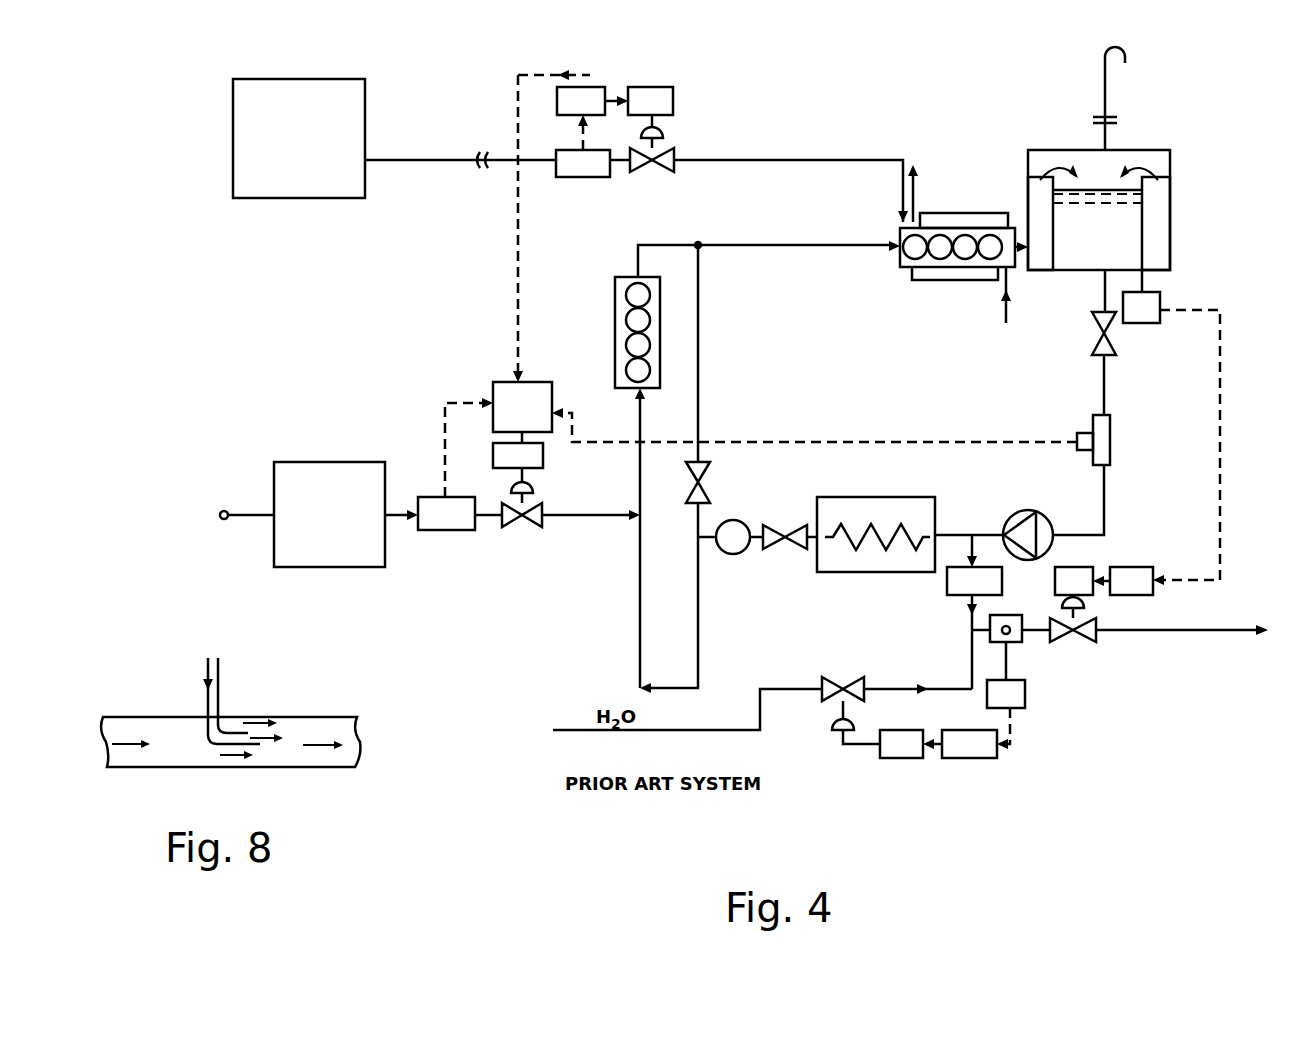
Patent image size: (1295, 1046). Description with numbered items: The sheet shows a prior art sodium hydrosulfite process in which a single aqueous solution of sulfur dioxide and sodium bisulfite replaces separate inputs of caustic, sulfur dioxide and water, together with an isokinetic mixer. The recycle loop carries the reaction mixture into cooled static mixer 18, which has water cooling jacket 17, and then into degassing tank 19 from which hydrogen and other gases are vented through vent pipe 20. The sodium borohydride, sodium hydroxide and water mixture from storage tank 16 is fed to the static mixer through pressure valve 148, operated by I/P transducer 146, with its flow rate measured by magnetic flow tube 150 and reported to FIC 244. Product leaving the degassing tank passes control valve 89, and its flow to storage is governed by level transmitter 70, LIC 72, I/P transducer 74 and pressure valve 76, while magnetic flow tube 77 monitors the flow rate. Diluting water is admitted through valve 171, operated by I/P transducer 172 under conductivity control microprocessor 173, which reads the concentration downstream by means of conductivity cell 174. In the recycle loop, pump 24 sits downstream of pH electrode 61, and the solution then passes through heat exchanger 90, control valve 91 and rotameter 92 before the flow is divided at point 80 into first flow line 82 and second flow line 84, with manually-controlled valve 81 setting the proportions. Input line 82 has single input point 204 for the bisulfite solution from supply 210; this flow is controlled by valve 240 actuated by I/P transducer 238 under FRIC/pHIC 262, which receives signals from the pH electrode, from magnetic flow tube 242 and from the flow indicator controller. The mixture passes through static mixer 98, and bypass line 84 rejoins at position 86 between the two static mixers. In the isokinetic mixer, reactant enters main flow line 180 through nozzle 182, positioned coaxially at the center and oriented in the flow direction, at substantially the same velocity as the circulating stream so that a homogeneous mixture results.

In FIG. 4, the storage tank 16 is at (233, 113).
In FIG. 4, the water cooling jacket 17 is at (976, 213).
In FIG. 4, the static mixer 18 is at (941, 235).
In FIG. 4, the degassing tank 19 is at (1162, 230).
In FIG. 4, the vent pipe 20 is at (1106, 98).
In FIG. 4, the pump 24 is at (1025, 523).
In FIG. 4, the pH electrode 61 is at (1110, 462).
In FIG. 4, the level transmitter 70 is at (1160, 300).
In FIG. 4, the LIC 72 is at (1128, 568).
In FIG. 4, the I/P transducer 74 is at (1075, 569).
In FIG. 4, the pressure valve 76 is at (1076, 636).
In FIG. 4, the magnetic flow tube 77 is at (952, 596).
In FIG. 4, the dividing point 80 is at (697, 540).
In FIG. 4, the manually-controlled valve 81 is at (690, 480).
In FIG. 4, the first flow line 82 is at (699, 647).
In FIG. 4, the second flow line 84 is at (699, 350).
In FIG. 4, the rejoining position 86 is at (699, 245).
In FIG. 4, the control valve 89 is at (1096, 341).
In FIG. 4, the heat exchanger 90 is at (869, 497).
In FIG. 4, the control valve 91 is at (785, 547).
In FIG. 4, the rotameter 92 is at (737, 554).
In FIG. 4, the static mixer 98 is at (615, 303).
In FIG. 4, the I/P transducer 146 is at (673, 101).
In FIG. 4, the pressure valve 148 is at (657, 170).
In FIG. 4, the magnetic flow tube 150 is at (583, 177).
In FIG. 4, the valve 171 is at (843, 686).
In FIG. 4, the I/P transducer 172 is at (899, 758).
In FIG. 4, the conductivity control microprocessor 173 is at (977, 758).
In FIG. 4, the conductivity cell 174 is at (1024, 644).
In FIG. 8, the main flow line 180 is at (120, 717).
In FIG. 8, the nozzle 182 is at (222, 713).
In FIG. 4, the input point 204 is at (642, 517).
In FIG. 4, the supply 210 is at (274, 549).
In FIG. 4, the I/P transducer 238 is at (543, 455).
In FIG. 4, the valve 240 is at (514, 528).
In FIG. 4, the magnetic flow tube 242 is at (445, 531).
In FIG. 4, the FIC 244 is at (590, 90).
In FIG. 4, the FRIC/pHIC 262 is at (543, 385).